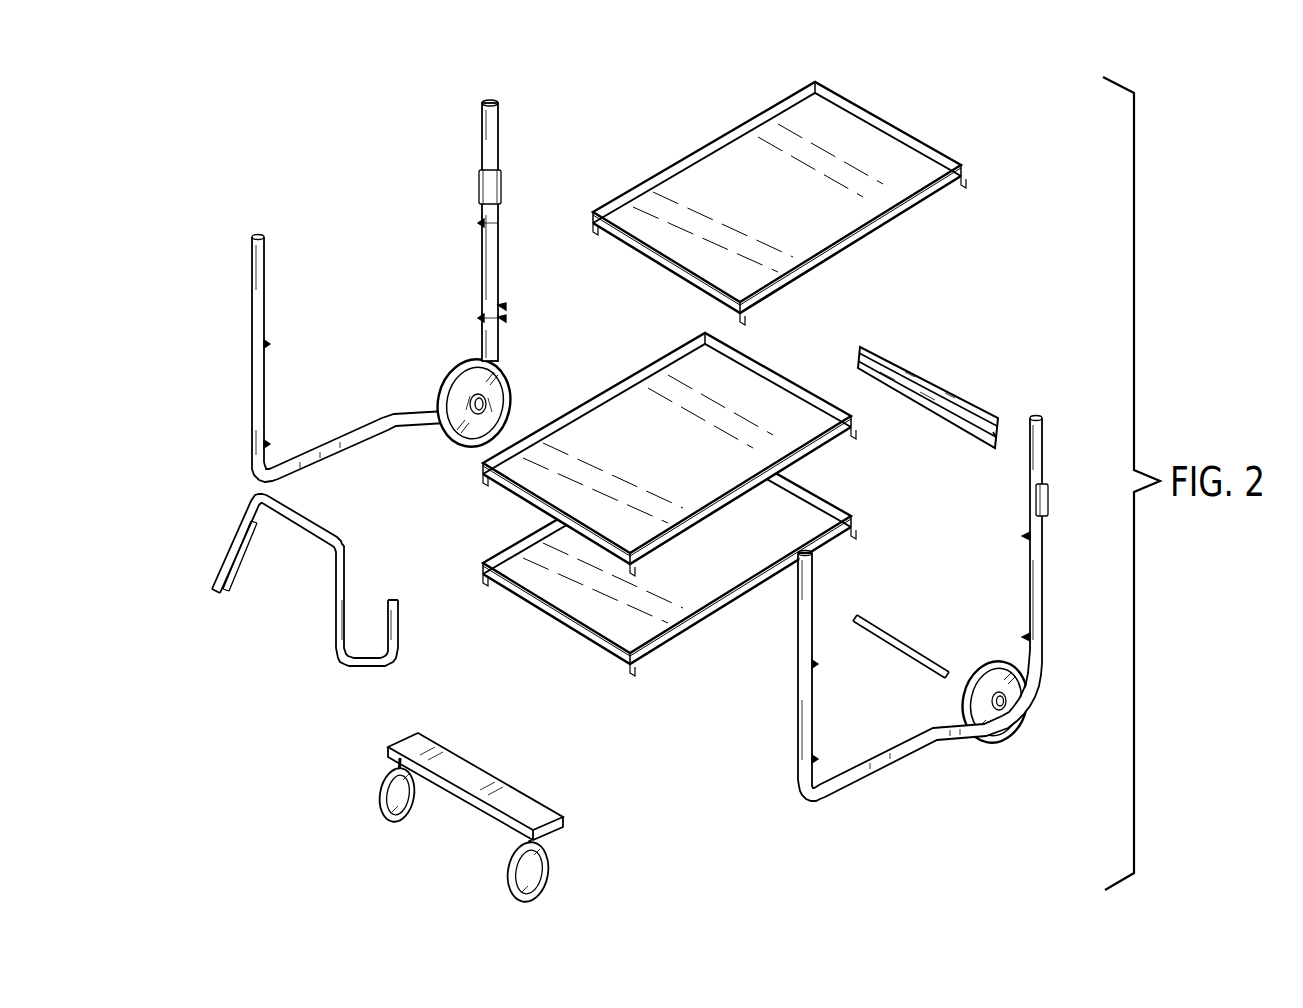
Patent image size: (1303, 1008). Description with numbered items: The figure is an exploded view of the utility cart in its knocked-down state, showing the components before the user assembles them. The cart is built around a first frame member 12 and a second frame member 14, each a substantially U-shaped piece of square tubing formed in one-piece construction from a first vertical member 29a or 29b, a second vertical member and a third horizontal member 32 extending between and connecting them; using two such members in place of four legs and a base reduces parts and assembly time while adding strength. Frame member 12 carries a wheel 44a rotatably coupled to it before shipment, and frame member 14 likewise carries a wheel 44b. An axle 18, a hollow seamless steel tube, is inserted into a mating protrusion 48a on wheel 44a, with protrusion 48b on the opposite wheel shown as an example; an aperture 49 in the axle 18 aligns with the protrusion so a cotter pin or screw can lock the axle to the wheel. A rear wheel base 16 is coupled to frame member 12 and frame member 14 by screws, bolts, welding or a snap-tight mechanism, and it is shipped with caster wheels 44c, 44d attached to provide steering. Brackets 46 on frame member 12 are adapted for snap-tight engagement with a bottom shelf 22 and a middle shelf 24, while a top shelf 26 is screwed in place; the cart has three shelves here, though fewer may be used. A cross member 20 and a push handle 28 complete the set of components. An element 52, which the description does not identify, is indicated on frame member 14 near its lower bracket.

The first frame member 12 is at (1043, 455).
The second frame member 14 is at (498, 134).
The rear wheel base 16 is at (517, 790).
The axle 18 is at (914, 655).
The cross member 20 is at (916, 372).
The bottom shelf 22 is at (710, 579).
The middle shelf 24 is at (692, 476).
The top shelf 26 is at (800, 212).
The push handle 28 is at (302, 513).
The first vertical member 29a is at (1043, 527).
The first vertical member 29b is at (498, 208).
The third horizontal member 32 is at (898, 760).
The wheel 44a is at (997, 665).
The wheel 44b is at (473, 366).
The caster wheel 44c is at (541, 886).
The caster wheel 44d is at (405, 815).
The brackets 46 is at (1043, 546).
The mating protrusion 48a is at (972, 667).
The protrusion 48b is at (482, 406).
The aperture 49 is at (930, 678).
The fastener 52 is at (505, 317).